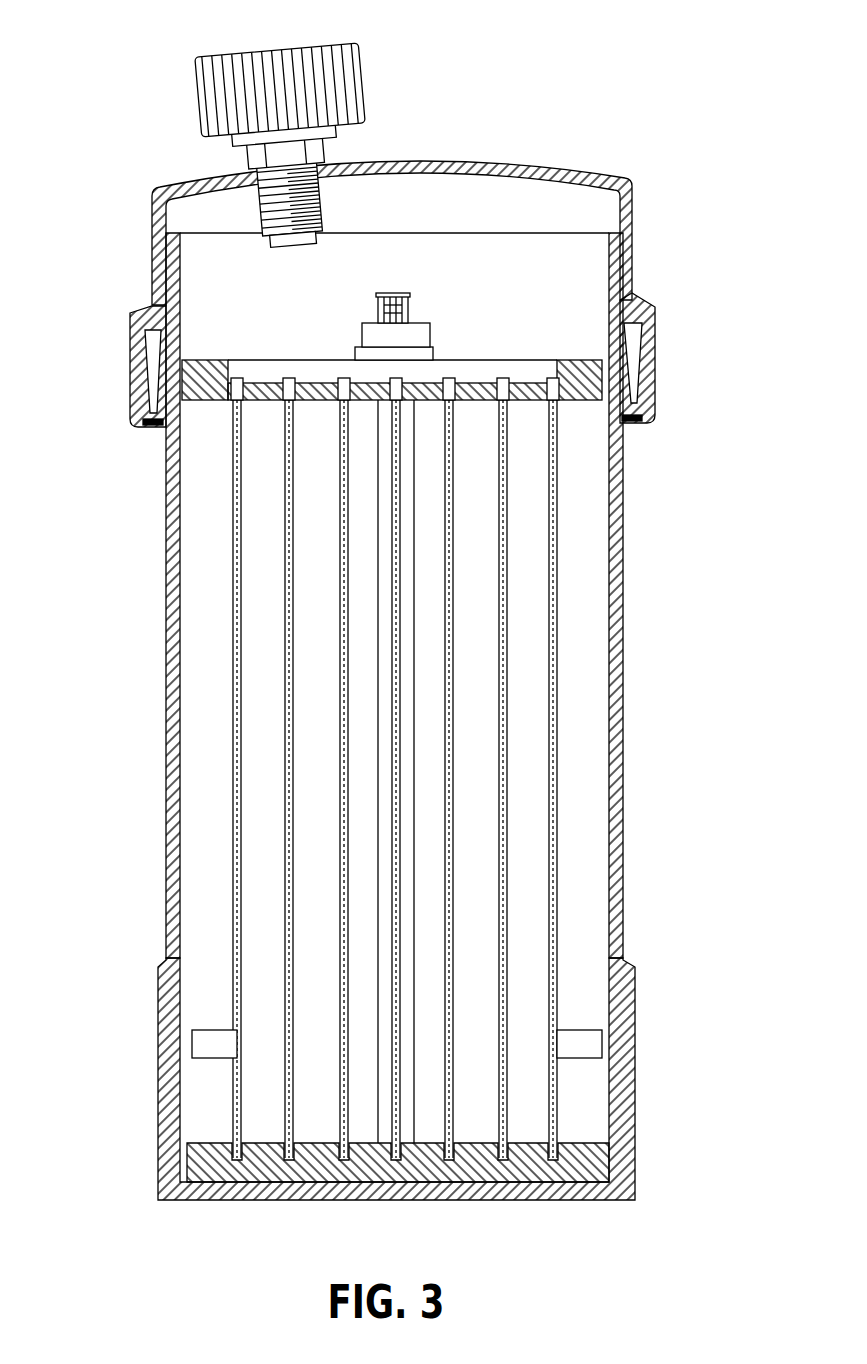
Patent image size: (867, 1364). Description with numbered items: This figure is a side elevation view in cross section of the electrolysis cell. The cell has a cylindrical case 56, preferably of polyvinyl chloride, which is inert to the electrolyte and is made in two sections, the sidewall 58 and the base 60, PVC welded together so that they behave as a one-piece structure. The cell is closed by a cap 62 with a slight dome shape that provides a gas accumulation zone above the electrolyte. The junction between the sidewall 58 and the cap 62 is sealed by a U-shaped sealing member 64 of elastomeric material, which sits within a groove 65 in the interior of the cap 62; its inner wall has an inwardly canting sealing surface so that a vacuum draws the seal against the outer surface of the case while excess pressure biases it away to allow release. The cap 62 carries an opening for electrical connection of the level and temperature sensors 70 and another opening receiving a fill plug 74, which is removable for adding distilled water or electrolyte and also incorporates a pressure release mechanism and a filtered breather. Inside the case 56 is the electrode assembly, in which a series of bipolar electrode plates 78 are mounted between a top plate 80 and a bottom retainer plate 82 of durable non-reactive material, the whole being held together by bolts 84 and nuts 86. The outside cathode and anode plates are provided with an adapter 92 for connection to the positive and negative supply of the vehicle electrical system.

The case 56 is at (444, 716).
The sidewall 58 is at (623, 545).
The base 60 is at (638, 1060).
The cap 62 is at (516, 176).
The U-shaped sealing member 64 is at (140, 331).
The groove 65 is at (147, 430).
The level and temperature sensors 70 is at (432, 355).
The fill plug 74 is at (344, 62).
The electrode plates 78 is at (555, 775).
The top plate 80 is at (588, 381).
The bottom retainer plate 82 is at (590, 1145).
The bolts 84 is at (403, 295).
The nuts 86 is at (437, 335).
The adapter 92 is at (577, 1035).